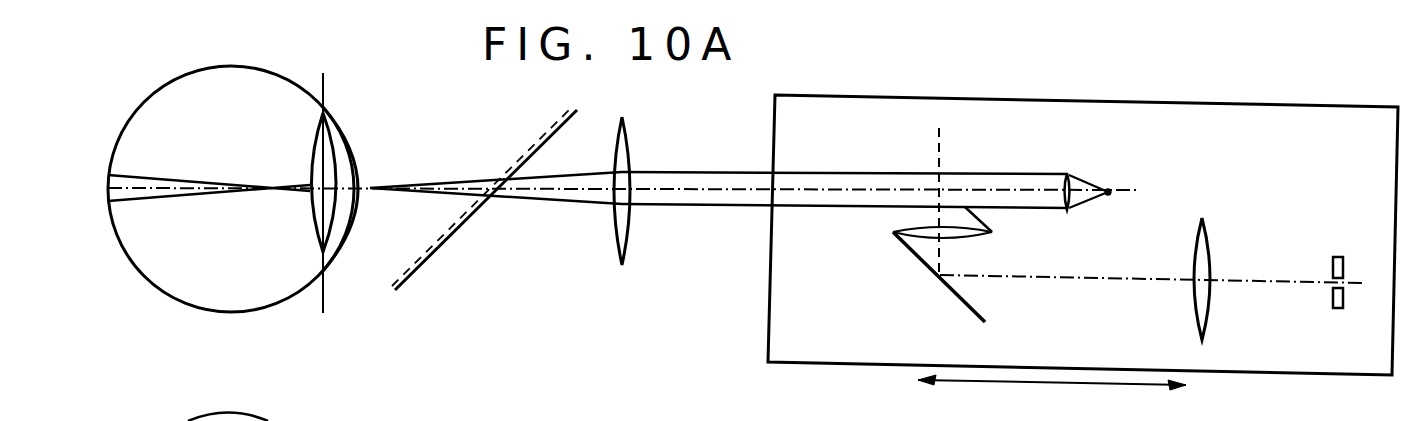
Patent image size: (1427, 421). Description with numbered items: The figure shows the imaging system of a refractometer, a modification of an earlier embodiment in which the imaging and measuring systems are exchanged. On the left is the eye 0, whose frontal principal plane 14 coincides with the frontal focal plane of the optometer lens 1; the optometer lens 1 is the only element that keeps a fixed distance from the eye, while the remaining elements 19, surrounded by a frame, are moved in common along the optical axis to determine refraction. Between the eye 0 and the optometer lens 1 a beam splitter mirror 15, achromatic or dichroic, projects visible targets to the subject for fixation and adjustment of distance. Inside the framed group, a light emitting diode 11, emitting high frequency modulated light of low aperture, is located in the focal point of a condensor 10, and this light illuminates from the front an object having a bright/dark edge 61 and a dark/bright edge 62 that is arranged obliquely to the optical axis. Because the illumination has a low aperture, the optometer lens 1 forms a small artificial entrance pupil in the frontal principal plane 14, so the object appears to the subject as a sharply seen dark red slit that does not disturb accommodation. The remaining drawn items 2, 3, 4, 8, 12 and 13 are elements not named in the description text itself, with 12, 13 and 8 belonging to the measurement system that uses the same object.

The eye 0 is at (300, 84).
The optometer lens 1 is at (623, 119).
The light beam / fundus rays 2 is at (108, 200).
The eye 3 is at (118, 129).
The reference plane 4 is at (942, 159).
The photodetectors 8 is at (1346, 219).
The condensor 10 is at (1069, 173).
The light emitting diode 11 is at (1109, 200).
The mirror 12 is at (890, 233).
The imaging lens 13 is at (1205, 224).
The frontal principal plane of the eye 14 is at (330, 100).
The beam splitter mirror 15 is at (453, 241).
The movable elements 19 is at (767, 340).
The bright/dark edge 61 is at (916, 175).
The dark/bright edge 62 is at (987, 224).